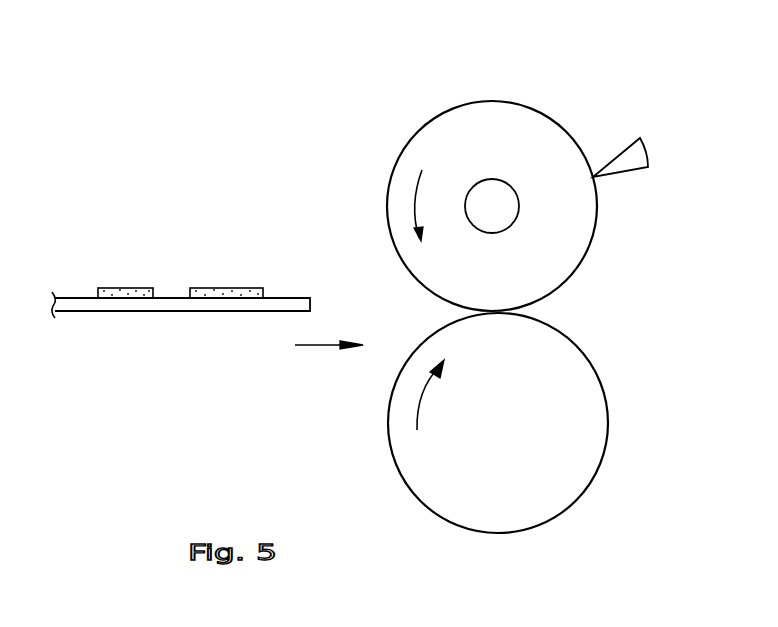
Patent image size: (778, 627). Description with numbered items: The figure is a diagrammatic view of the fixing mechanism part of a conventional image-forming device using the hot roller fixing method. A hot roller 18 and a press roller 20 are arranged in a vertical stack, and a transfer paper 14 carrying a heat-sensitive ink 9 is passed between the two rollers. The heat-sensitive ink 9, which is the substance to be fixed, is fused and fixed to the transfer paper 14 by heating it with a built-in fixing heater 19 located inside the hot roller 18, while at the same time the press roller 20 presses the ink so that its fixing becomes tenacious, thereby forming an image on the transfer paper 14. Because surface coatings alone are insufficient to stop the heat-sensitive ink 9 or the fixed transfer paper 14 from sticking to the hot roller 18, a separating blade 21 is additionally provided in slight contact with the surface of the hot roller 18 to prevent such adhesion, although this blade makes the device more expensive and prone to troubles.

The heat-sensitive ink 9 is at (220, 285).
The transfer paper 14 is at (165, 312).
The hot roller 18 is at (514, 118).
The fixing heater 19 is at (508, 211).
The press roller 20 is at (583, 398).
The separating blade 21 is at (631, 149).